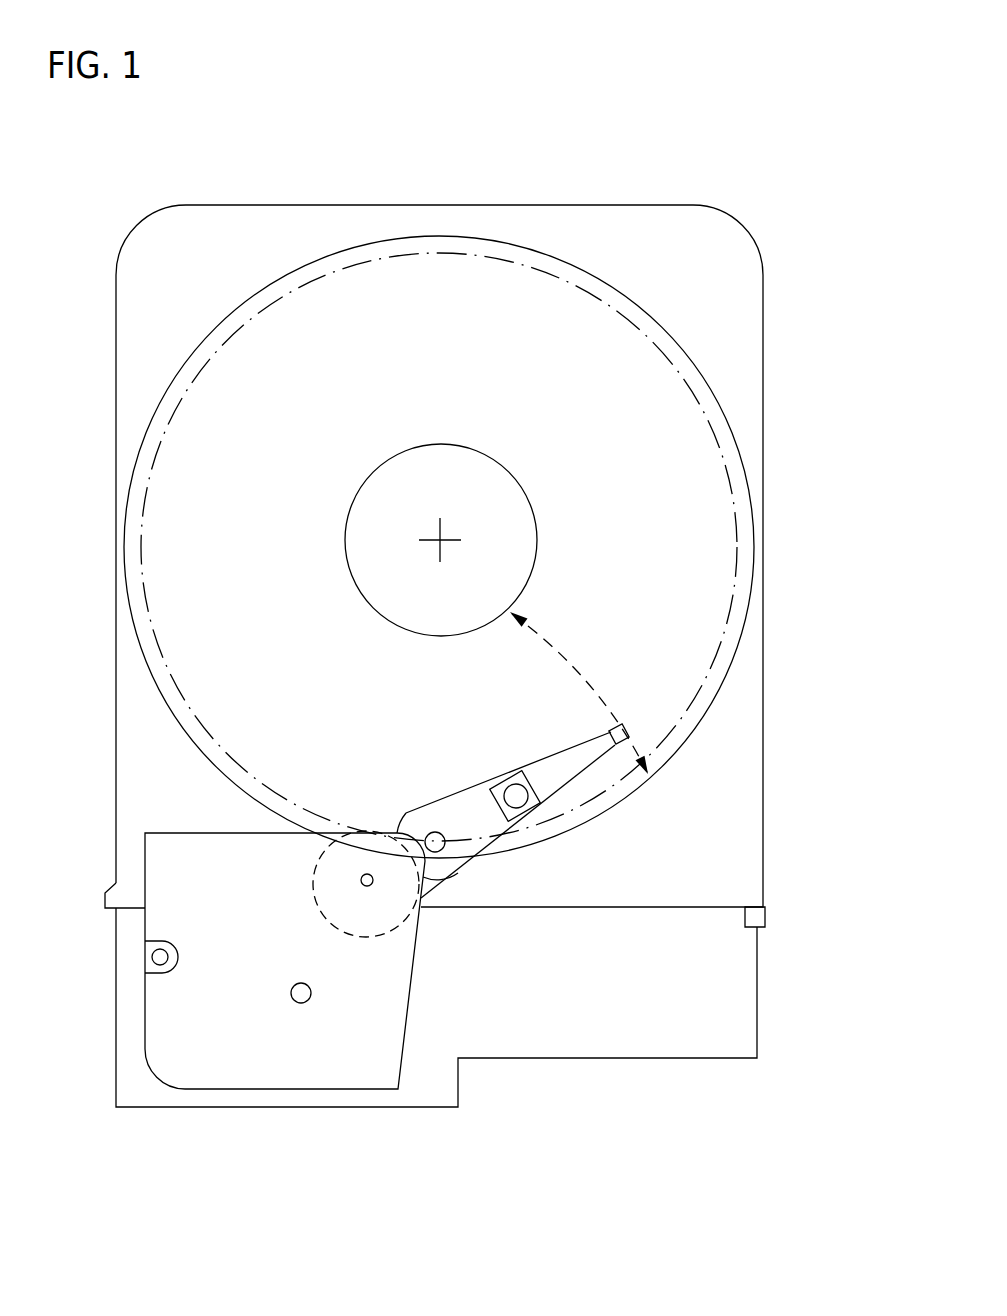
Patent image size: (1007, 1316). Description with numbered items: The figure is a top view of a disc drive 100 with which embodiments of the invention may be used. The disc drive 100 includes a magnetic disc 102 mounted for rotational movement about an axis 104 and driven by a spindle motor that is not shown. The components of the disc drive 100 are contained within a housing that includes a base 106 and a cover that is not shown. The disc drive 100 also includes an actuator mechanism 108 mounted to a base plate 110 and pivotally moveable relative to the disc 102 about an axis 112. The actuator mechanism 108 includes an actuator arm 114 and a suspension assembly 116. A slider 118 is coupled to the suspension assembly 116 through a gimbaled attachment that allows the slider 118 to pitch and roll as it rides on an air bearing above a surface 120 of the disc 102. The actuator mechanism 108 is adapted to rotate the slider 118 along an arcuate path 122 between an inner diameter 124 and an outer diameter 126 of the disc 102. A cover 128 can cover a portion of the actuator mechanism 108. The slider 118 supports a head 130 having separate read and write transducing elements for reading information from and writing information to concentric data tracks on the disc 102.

The disc drive 100 is at (383, 150).
The magnetic disc 102 is at (458, 370).
The axis 104 is at (437, 538).
The base 106 is at (763, 337).
The actuator mechanism 108 is at (448, 960).
The base plate 110 is at (673, 1060).
The axis 112 is at (361, 880).
The actuator arm 114 is at (460, 857).
The suspension assembly 116 is at (557, 753).
The slider 118 is at (613, 728).
The surface 120 is at (687, 518).
The arcuate path 122 is at (553, 642).
The inner diameter 124 is at (537, 538).
The outer diameter 126 is at (737, 558).
The cover 128 is at (242, 1060).
The head 130 is at (625, 727).